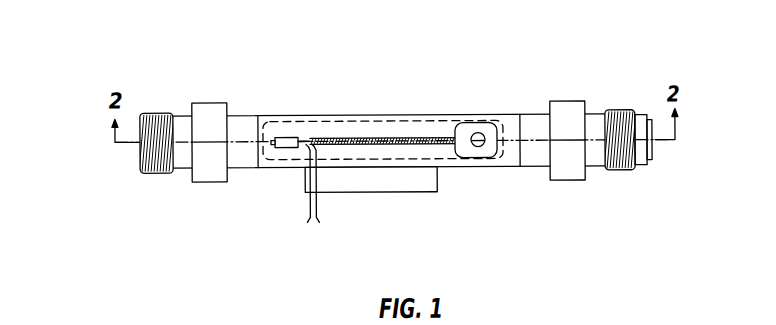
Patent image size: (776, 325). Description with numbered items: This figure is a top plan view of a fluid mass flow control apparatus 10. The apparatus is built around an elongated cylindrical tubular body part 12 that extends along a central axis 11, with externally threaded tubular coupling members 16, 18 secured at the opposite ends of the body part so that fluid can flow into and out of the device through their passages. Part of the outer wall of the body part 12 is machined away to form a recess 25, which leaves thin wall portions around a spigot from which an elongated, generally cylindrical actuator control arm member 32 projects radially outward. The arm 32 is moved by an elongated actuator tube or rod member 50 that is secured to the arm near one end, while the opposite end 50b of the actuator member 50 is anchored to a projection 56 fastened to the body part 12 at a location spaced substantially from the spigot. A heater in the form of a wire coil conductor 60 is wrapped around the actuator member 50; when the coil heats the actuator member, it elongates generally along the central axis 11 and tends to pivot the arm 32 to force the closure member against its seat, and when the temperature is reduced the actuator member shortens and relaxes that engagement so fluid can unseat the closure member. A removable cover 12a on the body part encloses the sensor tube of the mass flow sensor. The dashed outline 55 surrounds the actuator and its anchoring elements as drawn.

The fluid mass flow control apparatus 10 is at (542, 53).
The central axis 11 is at (240, 141).
The tubular body part 12 is at (377, 115).
The removable cover 12a is at (437, 175).
The tubular coupling member 16 is at (192, 110).
The tubular coupling member 18 is at (595, 114).
The recess 25 is at (493, 123).
The actuator control arm member 32 is at (467, 135).
The actuator tube or rod member 50 is at (397, 138).
The opposite end of actuator member 50b is at (305, 151).
The sensor element outline 55 is at (500, 158).
The projection 56 is at (287, 137).
The wire coil conductor 60 is at (373, 147).